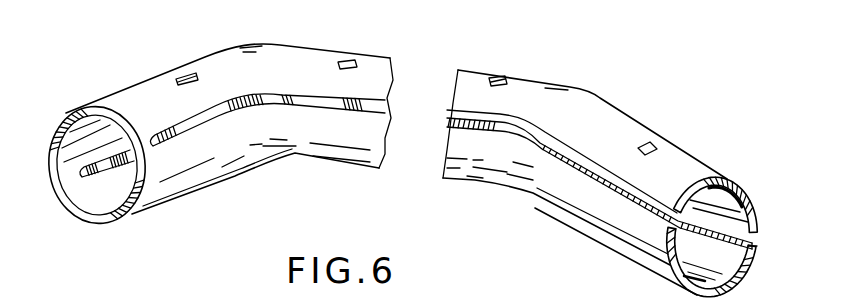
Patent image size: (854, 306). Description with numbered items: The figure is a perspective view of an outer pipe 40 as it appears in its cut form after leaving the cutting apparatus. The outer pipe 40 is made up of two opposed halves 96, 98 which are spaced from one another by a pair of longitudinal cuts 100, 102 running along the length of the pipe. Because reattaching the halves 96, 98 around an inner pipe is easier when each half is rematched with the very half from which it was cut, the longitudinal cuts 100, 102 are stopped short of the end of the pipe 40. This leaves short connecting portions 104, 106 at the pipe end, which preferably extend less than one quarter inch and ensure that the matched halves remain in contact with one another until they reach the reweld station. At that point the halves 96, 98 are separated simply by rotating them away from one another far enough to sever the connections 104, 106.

The outer pipe 40 is at (510, 66).
The outer pipe half 96 is at (677, 158).
The outer pipe half 98 is at (638, 240).
The longitudinal cut 100 is at (590, 169).
The longitudinal cut 102 is at (754, 244).
The connecting portion 104 is at (149, 163).
The connecting portion 106 is at (83, 183).